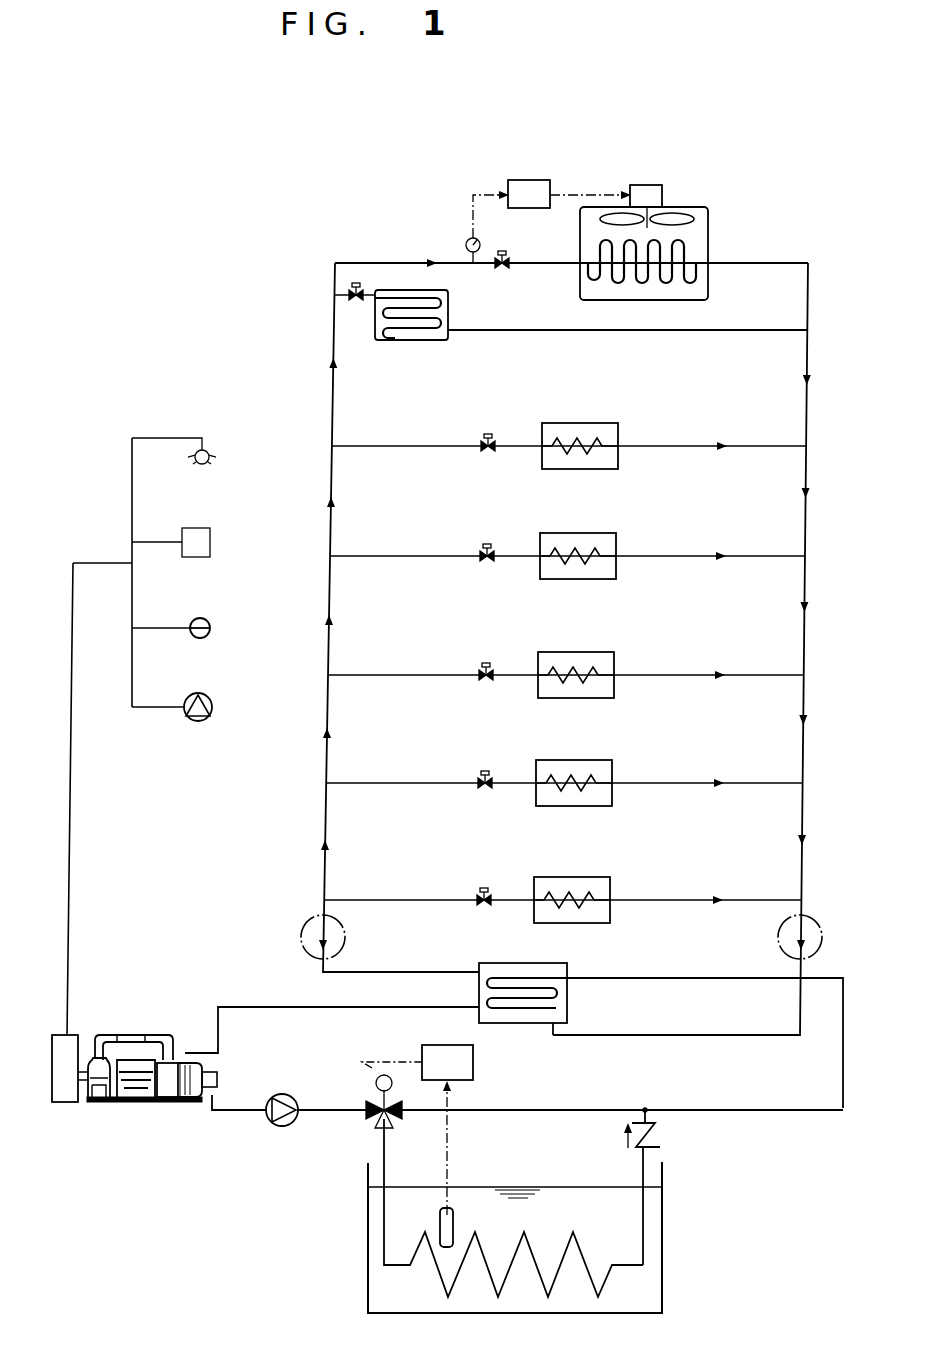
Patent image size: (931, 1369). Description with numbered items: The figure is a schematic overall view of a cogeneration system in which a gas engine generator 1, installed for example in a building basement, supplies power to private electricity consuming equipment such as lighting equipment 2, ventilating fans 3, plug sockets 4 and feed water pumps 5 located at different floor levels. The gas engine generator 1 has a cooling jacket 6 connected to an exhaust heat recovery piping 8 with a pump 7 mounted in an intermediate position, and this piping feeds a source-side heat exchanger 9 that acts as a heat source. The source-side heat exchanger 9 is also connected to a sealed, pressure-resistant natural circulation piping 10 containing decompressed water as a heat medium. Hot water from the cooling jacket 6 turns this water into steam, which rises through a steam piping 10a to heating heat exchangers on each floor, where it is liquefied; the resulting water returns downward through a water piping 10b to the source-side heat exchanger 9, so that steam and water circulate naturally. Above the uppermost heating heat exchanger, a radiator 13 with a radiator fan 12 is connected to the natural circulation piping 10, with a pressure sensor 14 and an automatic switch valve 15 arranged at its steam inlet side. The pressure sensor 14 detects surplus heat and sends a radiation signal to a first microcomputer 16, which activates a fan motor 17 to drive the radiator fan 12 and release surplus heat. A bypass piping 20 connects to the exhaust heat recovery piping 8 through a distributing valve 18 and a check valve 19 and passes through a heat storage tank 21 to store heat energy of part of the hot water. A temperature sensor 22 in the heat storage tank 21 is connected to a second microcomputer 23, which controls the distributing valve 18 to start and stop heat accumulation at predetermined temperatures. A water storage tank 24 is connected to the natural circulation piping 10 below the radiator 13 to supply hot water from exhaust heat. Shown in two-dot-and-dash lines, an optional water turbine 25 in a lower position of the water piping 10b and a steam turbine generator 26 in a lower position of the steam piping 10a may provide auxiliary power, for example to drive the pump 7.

The gas engine generator 1 is at (138, 1028).
The lighting equipment 2 is at (213, 442).
The ventilating fans 3 is at (211, 545).
The plug sockets 4 is at (211, 628).
The feed water pumps 5 is at (213, 707).
The cooling jacket 6 is at (190, 1103).
The pump 7 is at (282, 1127).
The exhaust heat recovery piping 8 is at (240, 1113).
The source-side heat exchanger 9 is at (567, 1003).
The natural circulation piping 10 is at (815, 552).
The steam piping 10a is at (326, 748).
The water piping 10b is at (807, 640).
The radiator fan 12 is at (685, 212).
The radiator 13 is at (709, 248).
The pressure sensor 14 is at (466, 246).
The automatic switch valve 15 is at (504, 254).
The first microcomputer 16 is at (530, 180).
The fan motor 17 is at (640, 185).
The distributing valve 18 is at (370, 1115).
The check valve 19 is at (660, 1135).
The bypass piping 20 is at (368, 1235).
The heat storage tank 21 is at (662, 1235).
The temperature sensor 22 is at (450, 1220).
The second microcomputer 23 is at (473, 1065).
The water storage tank 24 is at (420, 343).
The water turbine 25 is at (823, 938).
The steam turbine generator 26 is at (302, 932).